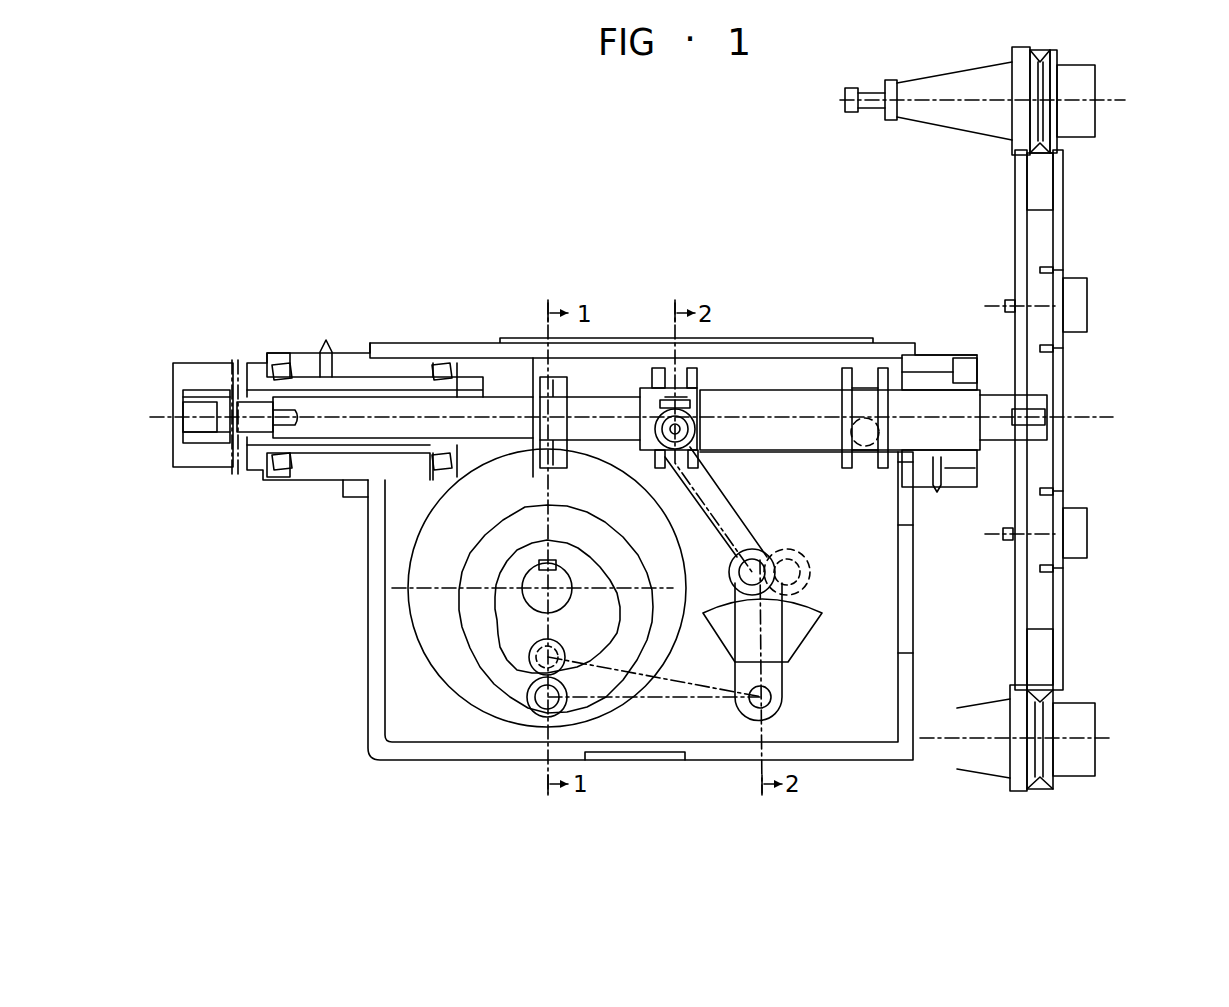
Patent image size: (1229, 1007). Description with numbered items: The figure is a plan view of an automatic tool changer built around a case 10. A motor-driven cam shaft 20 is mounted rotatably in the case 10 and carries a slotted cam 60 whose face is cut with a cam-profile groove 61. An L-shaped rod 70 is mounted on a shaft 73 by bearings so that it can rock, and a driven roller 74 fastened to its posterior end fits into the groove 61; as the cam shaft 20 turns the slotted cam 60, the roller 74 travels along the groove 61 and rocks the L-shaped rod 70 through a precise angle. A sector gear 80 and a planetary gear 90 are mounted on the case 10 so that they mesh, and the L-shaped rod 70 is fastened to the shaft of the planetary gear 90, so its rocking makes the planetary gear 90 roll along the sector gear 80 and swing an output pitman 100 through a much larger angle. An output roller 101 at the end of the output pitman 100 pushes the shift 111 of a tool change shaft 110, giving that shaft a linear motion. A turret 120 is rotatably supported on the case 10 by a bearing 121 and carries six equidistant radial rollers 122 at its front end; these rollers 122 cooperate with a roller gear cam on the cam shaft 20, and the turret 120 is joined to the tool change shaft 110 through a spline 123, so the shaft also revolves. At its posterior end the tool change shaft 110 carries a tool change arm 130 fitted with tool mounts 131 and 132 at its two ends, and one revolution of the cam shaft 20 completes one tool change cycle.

The case 10 is at (843, 758).
The cam shaft 20 is at (537, 593).
The slotted cam 60 is at (442, 545).
The cam-profile groove 61 is at (473, 637).
The L-shaped rod 70 is at (700, 707).
The shaft 73 is at (770, 708).
The driven roller 74 is at (530, 710).
The sector gear 80 is at (803, 642).
The planetary gear 90 is at (773, 593).
The output pitman 100 is at (713, 477).
The output roller 101 is at (685, 418).
The tool change shaft 110 is at (805, 410).
The shift 111 is at (688, 386).
The turret 120 is at (513, 360).
The bearing 121 is at (440, 372).
The rollers 122 is at (563, 366).
The spline 123 is at (483, 392).
The tool change arm 130 is at (1040, 370).
The tool mount 131 is at (1083, 760).
The tool mount 132 is at (1097, 78).